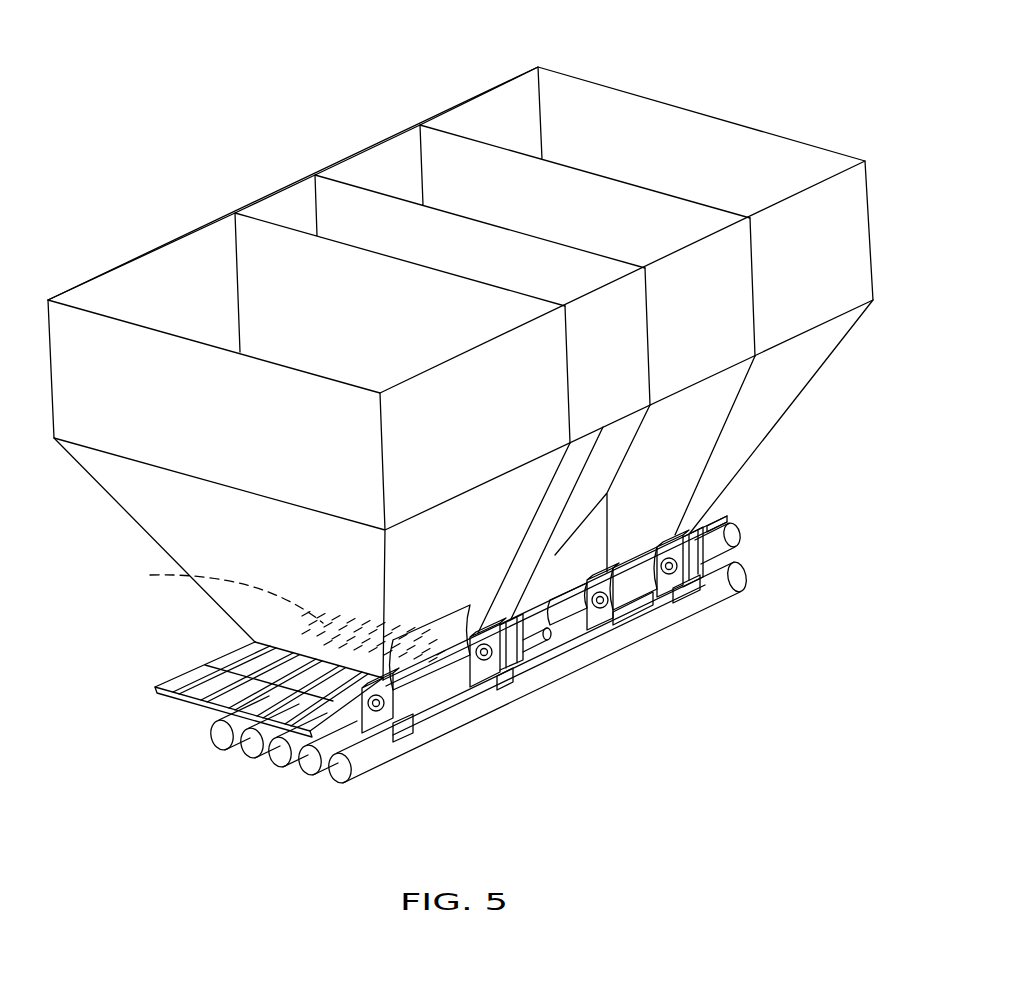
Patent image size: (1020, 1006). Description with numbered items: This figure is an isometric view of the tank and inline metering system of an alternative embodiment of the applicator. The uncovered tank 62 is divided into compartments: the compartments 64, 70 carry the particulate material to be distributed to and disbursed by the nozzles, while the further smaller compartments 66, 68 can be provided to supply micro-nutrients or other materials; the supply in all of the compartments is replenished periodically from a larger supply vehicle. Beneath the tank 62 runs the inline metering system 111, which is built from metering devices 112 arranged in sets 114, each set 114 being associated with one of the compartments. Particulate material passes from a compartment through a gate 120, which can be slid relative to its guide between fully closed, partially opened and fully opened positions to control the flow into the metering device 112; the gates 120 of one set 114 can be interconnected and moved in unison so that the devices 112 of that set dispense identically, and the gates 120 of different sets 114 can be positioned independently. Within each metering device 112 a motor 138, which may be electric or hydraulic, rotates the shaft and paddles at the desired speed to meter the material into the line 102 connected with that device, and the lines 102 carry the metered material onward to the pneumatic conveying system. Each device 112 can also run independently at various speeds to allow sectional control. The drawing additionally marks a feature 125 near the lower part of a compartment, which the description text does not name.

The tank 62 is at (460, 355).
The compartment 64 is at (476, 96).
The compartment 66 is at (364, 149).
The compartment 68 is at (281, 190).
The compartment 70 is at (140, 254).
The line 102 is at (215, 748).
The inline metering system 111 is at (746, 525).
The metering device 112 is at (443, 678).
The set of metering devices 114 is at (419, 741).
The gate 120 is at (207, 670).
The material flow path 125 is at (274, 612).
The motor 138 is at (740, 545).